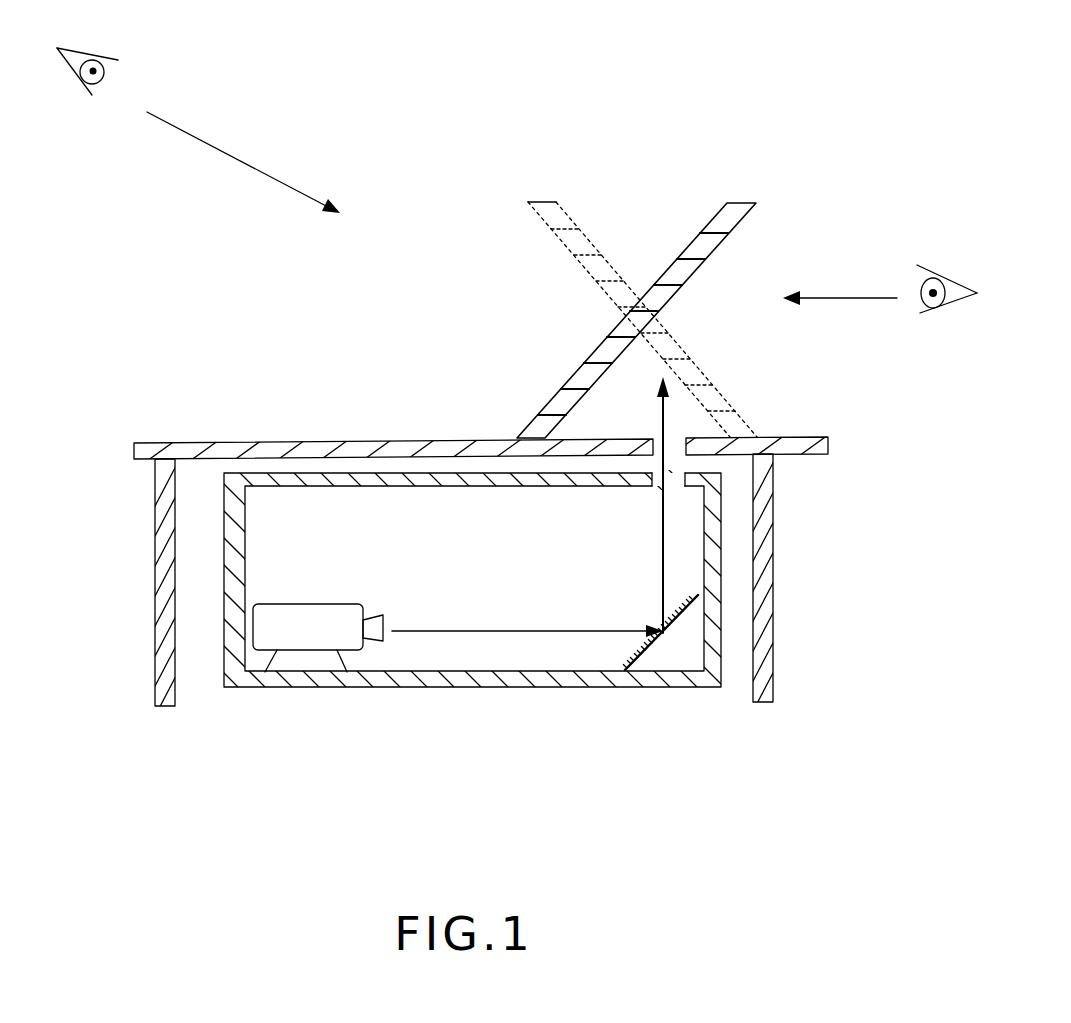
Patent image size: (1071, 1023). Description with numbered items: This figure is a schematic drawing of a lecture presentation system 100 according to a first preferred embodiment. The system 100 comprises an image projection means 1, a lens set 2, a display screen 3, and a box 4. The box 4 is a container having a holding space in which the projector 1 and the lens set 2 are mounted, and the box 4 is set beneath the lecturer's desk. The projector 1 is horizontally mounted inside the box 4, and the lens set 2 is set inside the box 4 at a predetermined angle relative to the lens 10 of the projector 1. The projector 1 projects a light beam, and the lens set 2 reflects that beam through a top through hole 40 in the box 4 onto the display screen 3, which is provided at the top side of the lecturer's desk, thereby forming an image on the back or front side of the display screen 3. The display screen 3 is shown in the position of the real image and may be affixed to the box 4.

The lecture presentation system 100 is at (855, 47).
The image projection means 1 is at (293, 635).
The lens 10 is at (375, 628).
The lens set 2 is at (640, 655).
The display screen 3 is at (612, 273).
The box 4 is at (578, 673).
The top through hole 40 is at (673, 452).